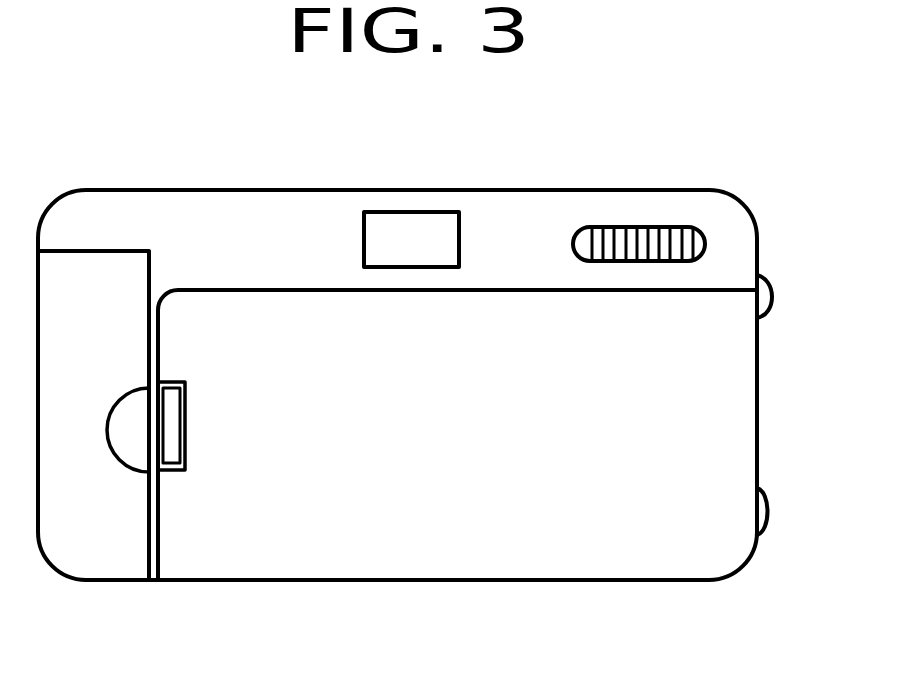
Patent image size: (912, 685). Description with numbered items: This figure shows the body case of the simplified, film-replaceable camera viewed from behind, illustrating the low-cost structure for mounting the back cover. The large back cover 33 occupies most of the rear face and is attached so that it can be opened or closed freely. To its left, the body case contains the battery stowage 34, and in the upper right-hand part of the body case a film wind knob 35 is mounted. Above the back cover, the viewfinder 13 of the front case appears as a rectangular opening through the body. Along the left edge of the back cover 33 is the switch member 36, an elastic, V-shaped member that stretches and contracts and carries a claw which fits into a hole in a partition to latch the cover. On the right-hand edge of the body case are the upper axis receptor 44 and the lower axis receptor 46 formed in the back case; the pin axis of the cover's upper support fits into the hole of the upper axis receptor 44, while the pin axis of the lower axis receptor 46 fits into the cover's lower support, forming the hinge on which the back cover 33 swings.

The viewfinder 13 is at (399, 218).
The back cover 33 is at (502, 445).
The battery stowage 34 is at (113, 518).
The film wind knob 35 is at (641, 233).
The switch member 36 is at (165, 427).
The upper axis receptor 44 is at (773, 297).
The lower axis receptor 46 is at (767, 511).